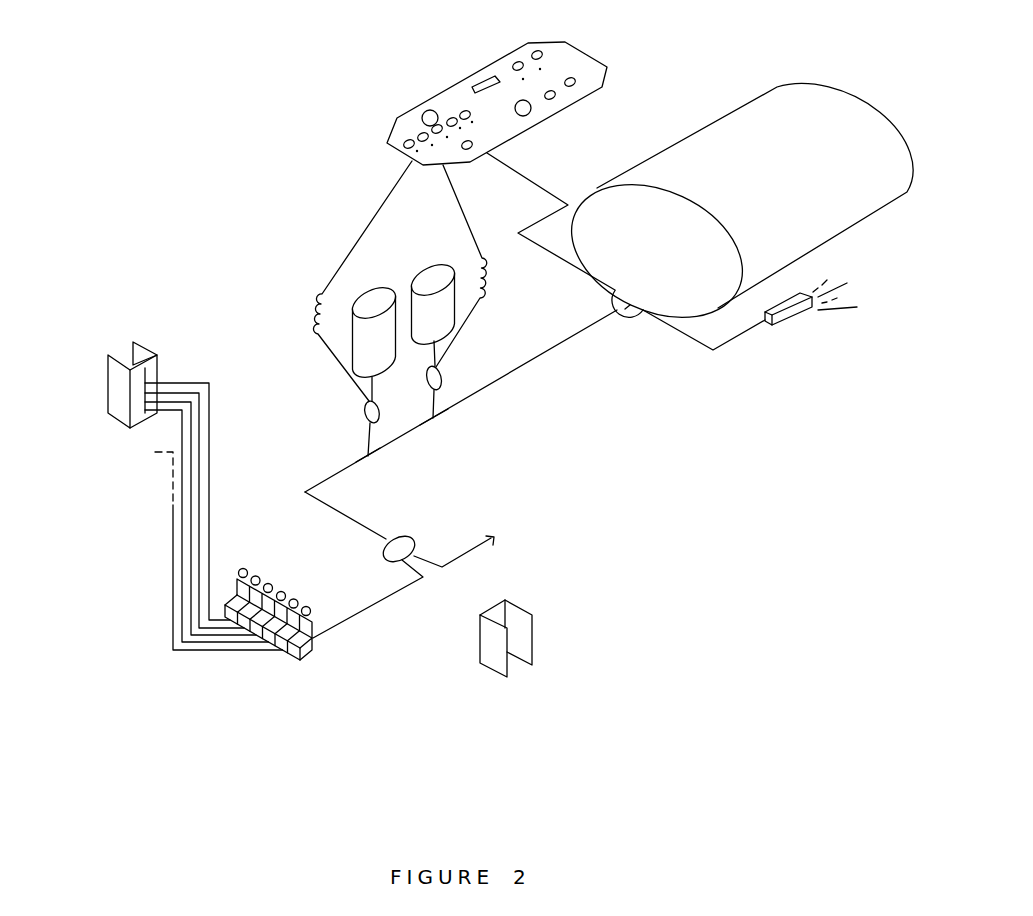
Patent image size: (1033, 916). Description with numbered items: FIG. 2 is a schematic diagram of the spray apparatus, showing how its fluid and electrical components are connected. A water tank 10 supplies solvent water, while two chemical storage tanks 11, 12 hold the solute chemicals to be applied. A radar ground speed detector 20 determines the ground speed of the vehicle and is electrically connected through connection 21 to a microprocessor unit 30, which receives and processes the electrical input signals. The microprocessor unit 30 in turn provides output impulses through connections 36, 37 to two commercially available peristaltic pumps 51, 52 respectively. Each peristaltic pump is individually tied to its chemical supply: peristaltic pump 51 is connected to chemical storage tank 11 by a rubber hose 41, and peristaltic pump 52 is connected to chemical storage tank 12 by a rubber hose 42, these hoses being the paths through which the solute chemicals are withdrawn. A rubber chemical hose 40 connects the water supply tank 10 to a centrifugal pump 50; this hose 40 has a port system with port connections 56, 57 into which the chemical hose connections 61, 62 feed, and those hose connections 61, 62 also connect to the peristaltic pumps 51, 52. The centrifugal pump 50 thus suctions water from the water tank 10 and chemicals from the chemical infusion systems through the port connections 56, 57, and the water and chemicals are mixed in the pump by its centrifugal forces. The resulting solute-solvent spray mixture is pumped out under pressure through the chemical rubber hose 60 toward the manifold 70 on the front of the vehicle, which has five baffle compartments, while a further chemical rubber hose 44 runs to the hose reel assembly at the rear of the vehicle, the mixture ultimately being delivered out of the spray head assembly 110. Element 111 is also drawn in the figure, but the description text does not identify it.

The water tank 10 is at (750, 100).
The chemical storage tank 11 is at (362, 293).
The chemical storage tank 12 is at (422, 270).
The radar ground speed detector 20 is at (782, 322).
The connection 21 is at (688, 338).
The microprocessor unit 30 is at (578, 49).
The connection 36 is at (358, 240).
The connection 37 is at (467, 215).
The rubber chemical hose 40 is at (553, 348).
The rubber hose 41 is at (374, 387).
The rubber hose 42 is at (434, 360).
The chemical rubber hose 44 is at (475, 548).
The centrifugal pump 50 is at (398, 540).
The peristaltic pump 51 is at (363, 417).
The peristaltic pump 52 is at (443, 375).
The port connection 56 is at (368, 457).
The port connection 57 is at (435, 420).
The chemical rubber hose 60 is at (340, 623).
The chemical hose connection 61 is at (364, 442).
The chemical hose connection 62 is at (434, 397).
The manifold 70 is at (305, 662).
The spray head assembly 110 is at (108, 377).
The bracket 111 is at (507, 600).